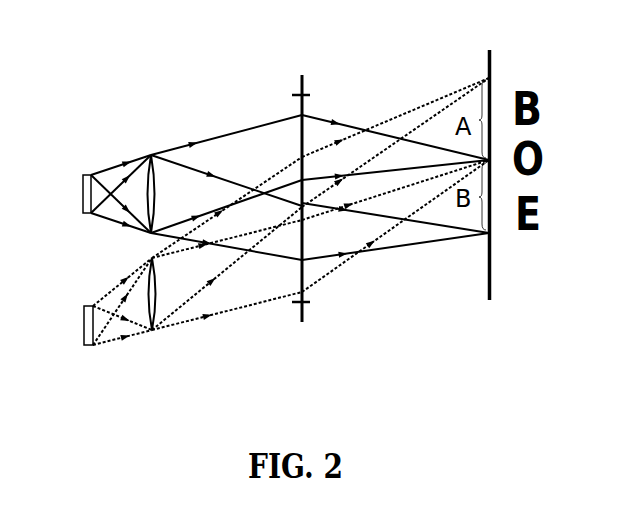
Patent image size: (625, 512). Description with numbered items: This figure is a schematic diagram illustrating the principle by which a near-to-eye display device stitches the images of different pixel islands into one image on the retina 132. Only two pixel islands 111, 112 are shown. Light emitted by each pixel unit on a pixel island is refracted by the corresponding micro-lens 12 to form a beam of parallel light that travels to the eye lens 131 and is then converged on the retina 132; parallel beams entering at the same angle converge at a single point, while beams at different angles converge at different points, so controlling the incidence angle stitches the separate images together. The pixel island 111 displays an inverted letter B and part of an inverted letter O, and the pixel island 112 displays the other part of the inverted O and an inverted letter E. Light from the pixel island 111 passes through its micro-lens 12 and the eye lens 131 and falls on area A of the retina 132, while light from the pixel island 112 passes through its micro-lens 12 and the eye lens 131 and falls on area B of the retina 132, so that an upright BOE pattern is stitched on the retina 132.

The pixel island 111 is at (88, 347).
The pixel island 112 is at (82, 174).
The micro-lens 12 is at (152, 154).
The eye lens 131 is at (302, 75).
The retina 132 is at (490, 50).